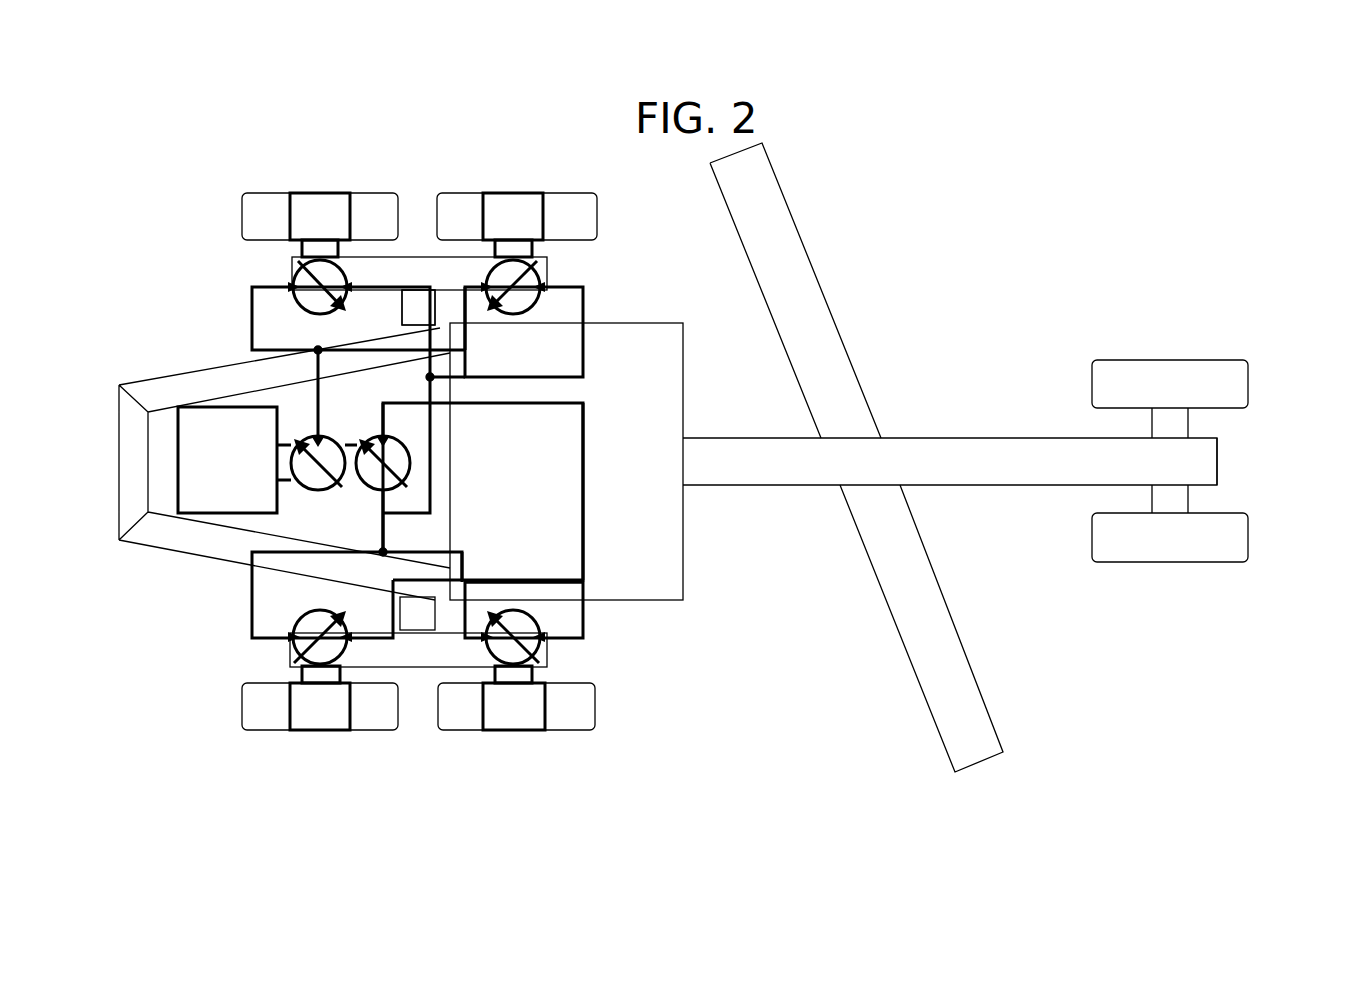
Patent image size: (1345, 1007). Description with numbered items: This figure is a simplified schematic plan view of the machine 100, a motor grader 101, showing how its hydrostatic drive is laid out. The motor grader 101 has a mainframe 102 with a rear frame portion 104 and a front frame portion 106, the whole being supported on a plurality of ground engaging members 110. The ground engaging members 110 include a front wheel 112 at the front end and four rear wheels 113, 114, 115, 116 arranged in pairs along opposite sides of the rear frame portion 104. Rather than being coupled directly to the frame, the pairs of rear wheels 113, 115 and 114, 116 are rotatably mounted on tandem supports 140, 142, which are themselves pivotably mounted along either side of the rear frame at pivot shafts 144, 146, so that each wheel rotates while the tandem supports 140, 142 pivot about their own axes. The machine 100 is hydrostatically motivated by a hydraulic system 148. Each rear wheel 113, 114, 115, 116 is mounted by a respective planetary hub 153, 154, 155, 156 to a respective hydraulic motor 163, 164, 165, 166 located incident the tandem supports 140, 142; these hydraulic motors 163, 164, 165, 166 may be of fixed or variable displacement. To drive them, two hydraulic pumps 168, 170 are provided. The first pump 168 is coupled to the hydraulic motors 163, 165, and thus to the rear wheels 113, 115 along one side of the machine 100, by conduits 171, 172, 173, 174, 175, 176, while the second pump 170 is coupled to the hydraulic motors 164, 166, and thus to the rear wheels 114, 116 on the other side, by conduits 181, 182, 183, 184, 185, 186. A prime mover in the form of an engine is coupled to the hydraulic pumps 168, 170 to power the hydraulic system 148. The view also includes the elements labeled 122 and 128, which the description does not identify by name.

The machine 100 is at (1005, 190).
The motor grader 101 is at (1055, 245).
The mainframe 102 is at (940, 415).
The rear frame portion 104 is at (150, 378).
The front frame portion 106 is at (1217, 462).
The ground engaging members 110 is at (610, 718).
The front wheel 112 is at (1185, 360).
The rear wheel 113 is at (575, 730).
The rear wheel 114 is at (560, 192).
The rear wheel 115 is at (365, 730).
The rear wheel 116 is at (365, 192).
The boom 122 is at (855, 322).
The housing 128 is at (683, 585).
The tandem support 140 is at (412, 257).
The tandem support 142 is at (408, 667).
The pivot shaft 144 is at (437, 300).
The pivot shaft 146 is at (433, 618).
The hydraulic system 148 is at (225, 684).
The planetary hub 153 is at (513, 730).
The planetary hub 154 is at (505, 192).
The planetary hub 155 is at (303, 730).
The planetary hub 156 is at (303, 192).
The hydraulic motor 163 is at (541, 648).
The hydraulic motor 164 is at (542, 282).
The hydraulic motor 165 is at (296, 648).
The hydraulic motor 166 is at (296, 277).
The first pump 168 is at (378, 436).
The second pump 170 is at (294, 472).
The conduit 171 is at (585, 505).
The conduit 172 is at (583, 620).
The conduit 173 is at (522, 580).
The conduit 174 is at (400, 530).
The conduit 175 is at (478, 560).
The conduit 176 is at (252, 596).
The conduit 181 is at (430, 460).
The conduit 182 is at (583, 300).
The conduit 183 is at (433, 298).
The conduit 184 is at (300, 387).
The conduit 185 is at (466, 335).
The conduit 186 is at (252, 318).